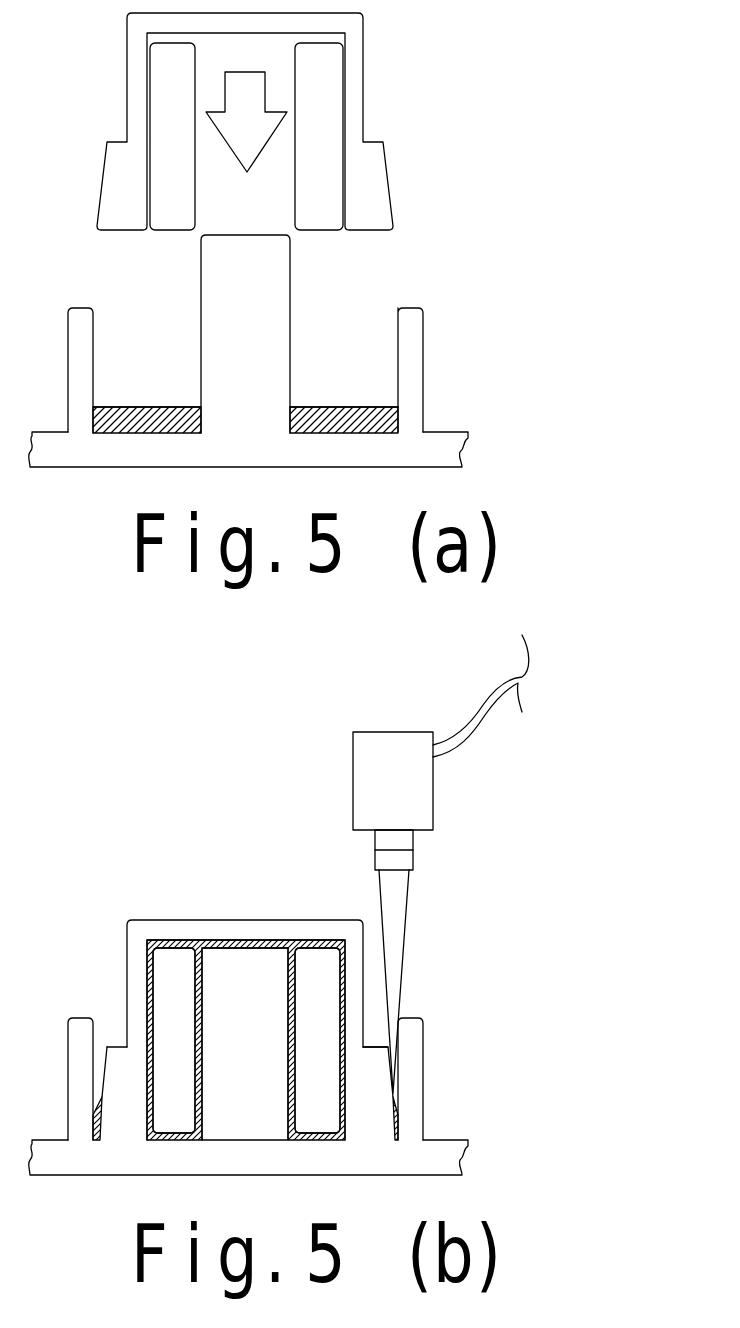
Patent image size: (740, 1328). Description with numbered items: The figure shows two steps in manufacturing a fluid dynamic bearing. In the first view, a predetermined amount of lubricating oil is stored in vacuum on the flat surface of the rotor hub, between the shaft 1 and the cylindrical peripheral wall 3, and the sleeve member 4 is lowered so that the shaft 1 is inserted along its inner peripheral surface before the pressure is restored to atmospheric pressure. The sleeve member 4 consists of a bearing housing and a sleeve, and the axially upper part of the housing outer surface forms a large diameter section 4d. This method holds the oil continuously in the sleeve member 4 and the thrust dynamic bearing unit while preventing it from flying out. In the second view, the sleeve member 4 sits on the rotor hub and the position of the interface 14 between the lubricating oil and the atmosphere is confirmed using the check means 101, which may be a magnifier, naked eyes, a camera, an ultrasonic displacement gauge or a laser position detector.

The shaft 1 is at (247, 268).
The cylindrical peripheral wall 3 is at (403, 1038).
The sleeve member 4 is at (404, 72).
The large diameter section 4d is at (387, 1117).
The interface 14 is at (393, 1097).
The check means 101 is at (404, 782).